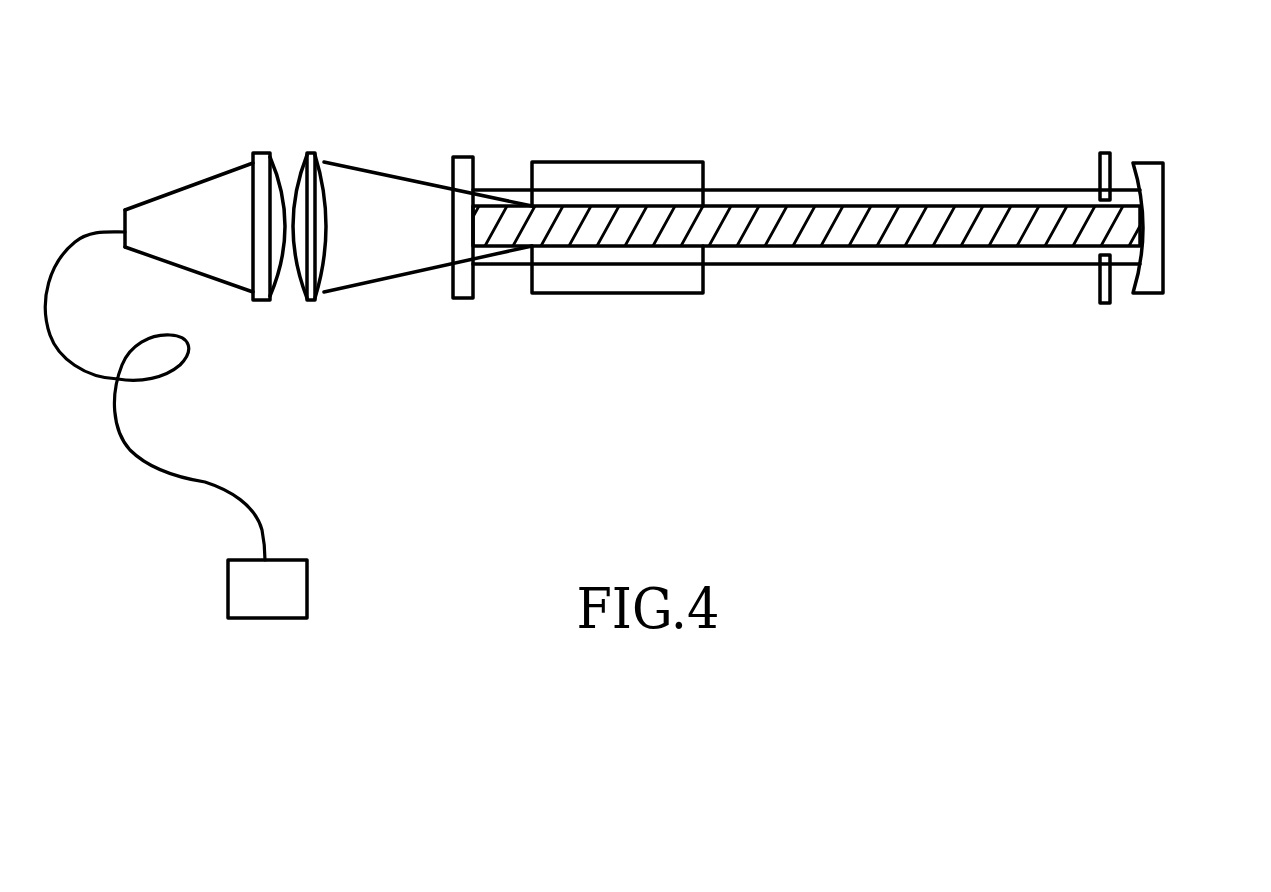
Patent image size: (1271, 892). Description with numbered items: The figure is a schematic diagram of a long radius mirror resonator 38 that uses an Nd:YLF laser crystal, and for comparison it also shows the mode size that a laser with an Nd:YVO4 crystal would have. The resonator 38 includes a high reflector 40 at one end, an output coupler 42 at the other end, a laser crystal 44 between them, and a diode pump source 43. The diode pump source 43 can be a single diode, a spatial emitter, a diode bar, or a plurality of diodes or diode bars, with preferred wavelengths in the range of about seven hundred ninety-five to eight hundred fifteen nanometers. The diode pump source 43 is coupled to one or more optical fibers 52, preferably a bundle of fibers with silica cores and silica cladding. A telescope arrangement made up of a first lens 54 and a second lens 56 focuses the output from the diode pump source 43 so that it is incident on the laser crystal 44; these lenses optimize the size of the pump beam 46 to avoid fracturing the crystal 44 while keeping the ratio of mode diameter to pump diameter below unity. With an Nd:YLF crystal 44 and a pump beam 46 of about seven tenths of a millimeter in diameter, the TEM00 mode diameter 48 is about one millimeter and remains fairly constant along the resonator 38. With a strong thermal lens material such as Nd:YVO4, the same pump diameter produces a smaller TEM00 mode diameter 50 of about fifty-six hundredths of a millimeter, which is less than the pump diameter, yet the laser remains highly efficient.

The long radius mirror resonator 38 is at (768, 288).
The high reflector 40 is at (463, 298).
The output coupler 42 is at (1153, 267).
The diode pump source 43 is at (613, 283).
The laser crystal 44 is at (288, 592).
The pump beam 46 is at (380, 193).
The TEM00 mode diameter 48 is at (830, 190).
The TEM00 mode diameter 50 is at (930, 245).
The optical fibers 52 is at (152, 467).
The first lens 54 is at (260, 140).
The second lens 56 is at (312, 140).